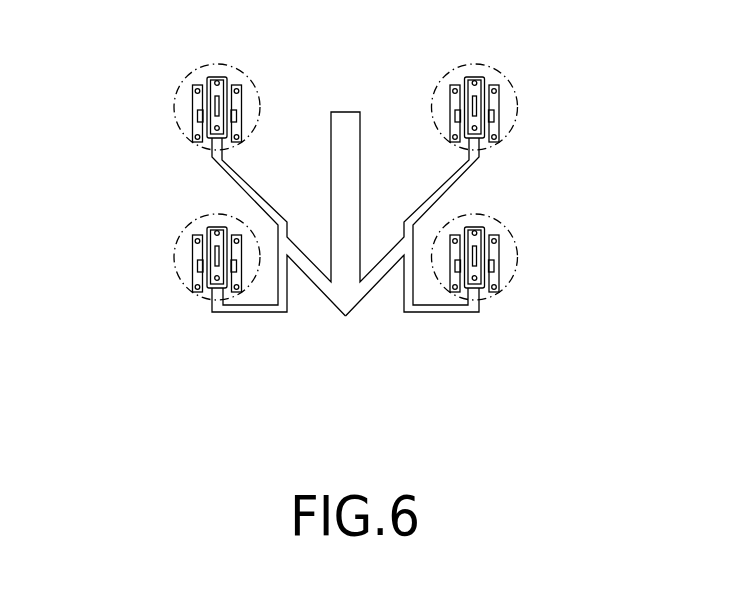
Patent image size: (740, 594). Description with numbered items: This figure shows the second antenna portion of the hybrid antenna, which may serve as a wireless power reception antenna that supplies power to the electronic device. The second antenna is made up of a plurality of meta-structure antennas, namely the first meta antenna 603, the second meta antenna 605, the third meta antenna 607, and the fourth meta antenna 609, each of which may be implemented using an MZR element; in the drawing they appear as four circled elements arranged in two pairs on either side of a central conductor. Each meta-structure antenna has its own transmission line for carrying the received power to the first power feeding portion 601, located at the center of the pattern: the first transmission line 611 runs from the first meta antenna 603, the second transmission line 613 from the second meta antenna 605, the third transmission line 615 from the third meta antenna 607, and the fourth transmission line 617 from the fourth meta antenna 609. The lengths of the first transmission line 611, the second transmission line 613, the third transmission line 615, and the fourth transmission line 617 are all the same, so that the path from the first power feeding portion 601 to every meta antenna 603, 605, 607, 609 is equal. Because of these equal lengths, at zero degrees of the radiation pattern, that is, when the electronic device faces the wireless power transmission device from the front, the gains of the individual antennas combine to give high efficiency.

The first power feeding portion 601 is at (350, 110).
The first meta antenna 603 is at (174, 113).
The second meta antenna 605 is at (174, 257).
The third meta antenna 607 is at (518, 257).
The fourth meta antenna 609 is at (518, 109).
The first transmission line 611 is at (237, 182).
The second transmission line 613 is at (250, 313).
The third transmission line 615 is at (440, 313).
The fourth transmission line 617 is at (454, 182).